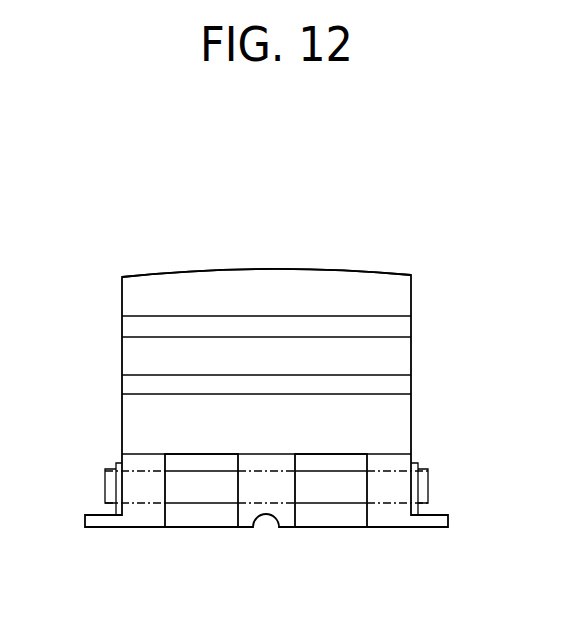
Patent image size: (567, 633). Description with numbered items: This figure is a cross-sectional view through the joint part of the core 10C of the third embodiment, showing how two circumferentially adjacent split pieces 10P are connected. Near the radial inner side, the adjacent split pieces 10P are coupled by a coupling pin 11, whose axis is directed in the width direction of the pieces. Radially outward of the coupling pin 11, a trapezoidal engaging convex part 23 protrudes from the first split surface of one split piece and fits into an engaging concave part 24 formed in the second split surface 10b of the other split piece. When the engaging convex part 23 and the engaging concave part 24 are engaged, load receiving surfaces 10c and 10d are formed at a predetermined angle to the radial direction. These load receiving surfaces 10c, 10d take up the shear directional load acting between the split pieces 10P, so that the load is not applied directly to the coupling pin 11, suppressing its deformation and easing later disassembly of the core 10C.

The core 10C is at (411, 272).
The split piece 10P is at (238, 272).
The second split surface 10b is at (300, 283).
The load receiving surface 10c is at (395, 327).
The load receiving surface 10d is at (395, 383).
The engaging convex part 23 is at (142, 350).
The engaging concave part 24 is at (142, 410).
The coupling pin 11 is at (333, 492).